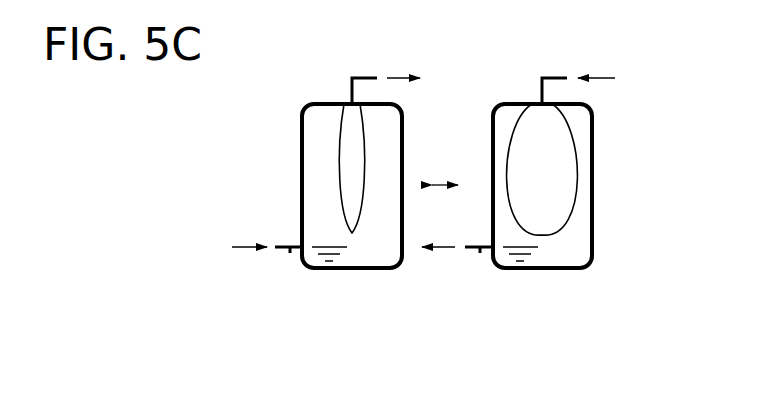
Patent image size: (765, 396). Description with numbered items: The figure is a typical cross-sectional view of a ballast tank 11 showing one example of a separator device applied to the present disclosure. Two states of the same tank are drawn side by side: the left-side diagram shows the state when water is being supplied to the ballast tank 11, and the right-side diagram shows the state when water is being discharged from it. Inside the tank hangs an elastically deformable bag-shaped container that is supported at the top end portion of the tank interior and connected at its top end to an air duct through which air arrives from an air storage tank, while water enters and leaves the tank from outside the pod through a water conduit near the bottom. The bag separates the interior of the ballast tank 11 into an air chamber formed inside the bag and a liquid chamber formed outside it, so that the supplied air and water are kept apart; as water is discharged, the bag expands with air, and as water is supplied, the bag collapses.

The ballast tank 11 is at (594, 234).